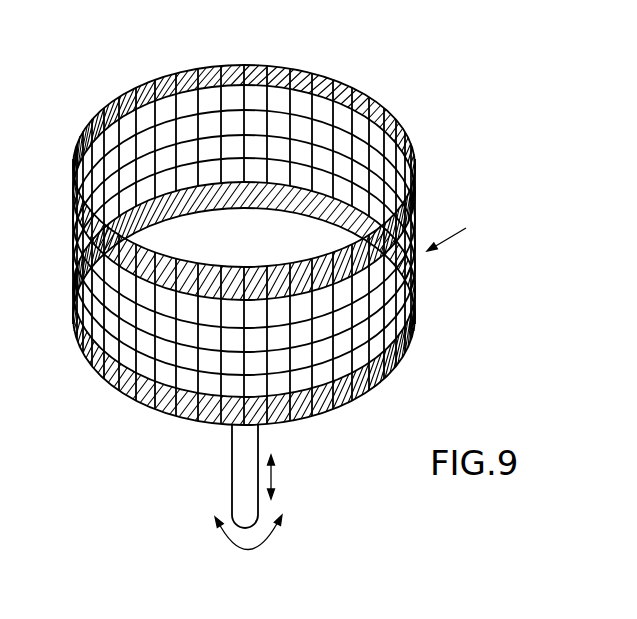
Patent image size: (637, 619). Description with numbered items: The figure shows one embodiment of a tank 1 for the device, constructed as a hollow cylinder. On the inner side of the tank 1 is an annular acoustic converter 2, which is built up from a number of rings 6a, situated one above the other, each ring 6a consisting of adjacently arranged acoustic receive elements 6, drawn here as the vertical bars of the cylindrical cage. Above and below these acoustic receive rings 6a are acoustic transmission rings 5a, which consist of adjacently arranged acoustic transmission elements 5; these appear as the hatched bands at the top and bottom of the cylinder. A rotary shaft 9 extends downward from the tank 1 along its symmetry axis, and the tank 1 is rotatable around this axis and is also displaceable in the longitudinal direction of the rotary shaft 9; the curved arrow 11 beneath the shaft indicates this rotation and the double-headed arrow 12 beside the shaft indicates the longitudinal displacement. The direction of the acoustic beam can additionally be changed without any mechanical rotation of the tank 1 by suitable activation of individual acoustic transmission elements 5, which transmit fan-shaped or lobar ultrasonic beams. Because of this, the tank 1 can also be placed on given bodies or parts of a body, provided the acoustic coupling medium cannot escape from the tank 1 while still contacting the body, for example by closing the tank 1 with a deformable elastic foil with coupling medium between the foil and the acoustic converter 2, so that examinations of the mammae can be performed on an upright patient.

The tank 1 is at (378, 381).
The annular acoustic converter 2 is at (455, 230).
The acoustic transmission elements 5 is at (391, 106).
The acoustic transmission rings 5a is at (186, 420).
The acoustic receive elements 6 is at (330, 178).
The rings of acoustic receive elements 6a is at (167, 105).
The rotary shaft 9 is at (243, 488).
The rotation direction arrow 11 is at (213, 532).
The axial movement arrow 12 is at (272, 481).